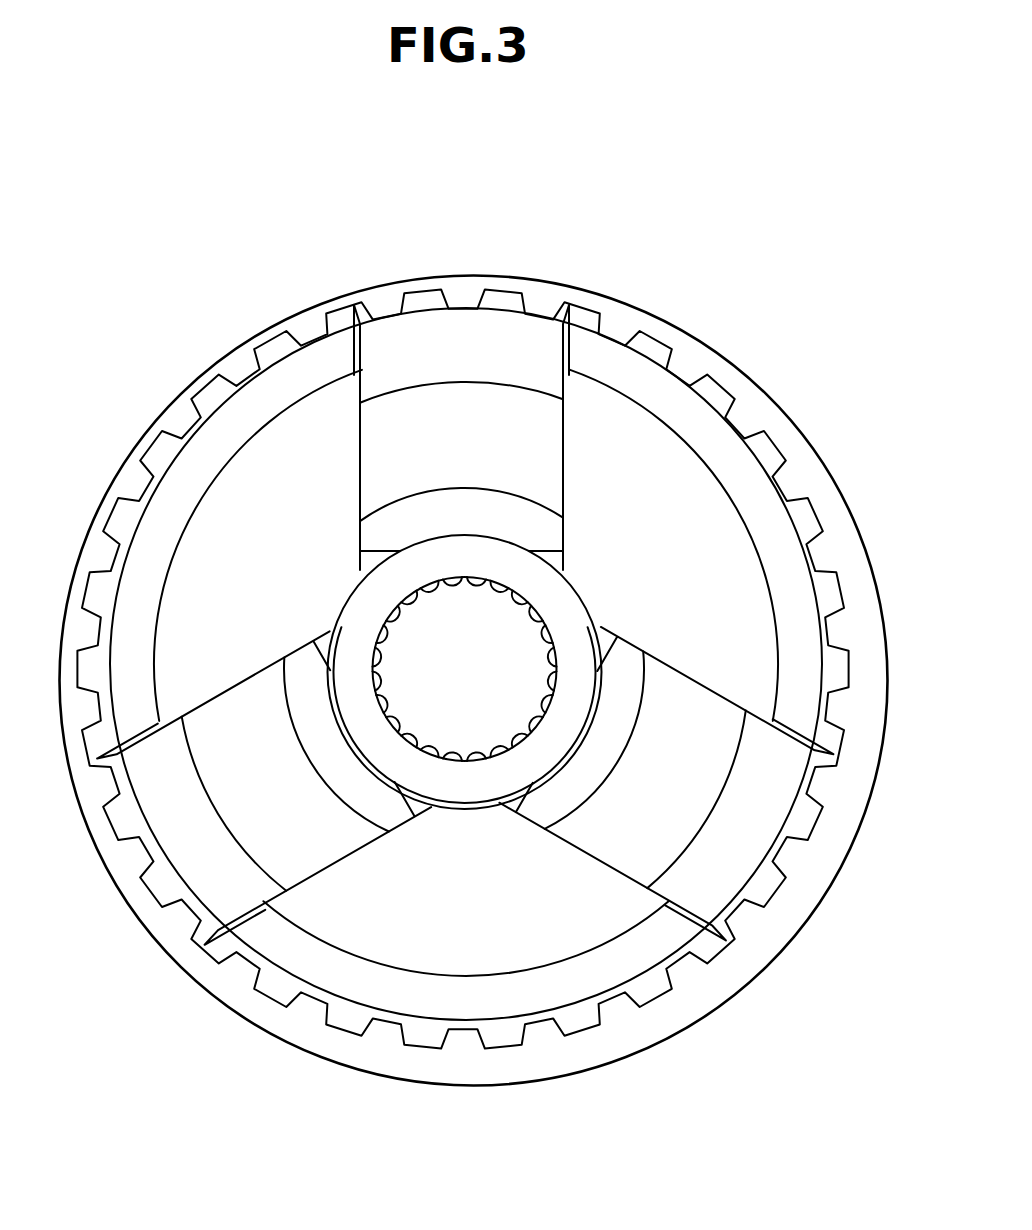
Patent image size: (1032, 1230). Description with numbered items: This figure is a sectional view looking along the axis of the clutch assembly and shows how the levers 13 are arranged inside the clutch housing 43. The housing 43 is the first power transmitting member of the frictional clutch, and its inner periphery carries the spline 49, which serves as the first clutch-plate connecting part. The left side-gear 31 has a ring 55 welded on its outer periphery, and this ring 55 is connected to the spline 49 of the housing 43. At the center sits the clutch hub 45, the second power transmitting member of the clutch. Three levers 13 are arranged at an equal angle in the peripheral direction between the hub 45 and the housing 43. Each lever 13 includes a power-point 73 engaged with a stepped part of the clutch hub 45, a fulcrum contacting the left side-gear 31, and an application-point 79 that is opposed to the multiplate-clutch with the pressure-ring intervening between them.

The lever 13 is at (358, 450).
The left side-gear 31 is at (668, 516).
The clutch housing 43 is at (722, 347).
The clutch hub 45 is at (485, 562).
The spline 49 is at (729, 397).
The ring 55 is at (657, 407).
The power-point 73 is at (407, 517).
The application-point 79 is at (502, 355).